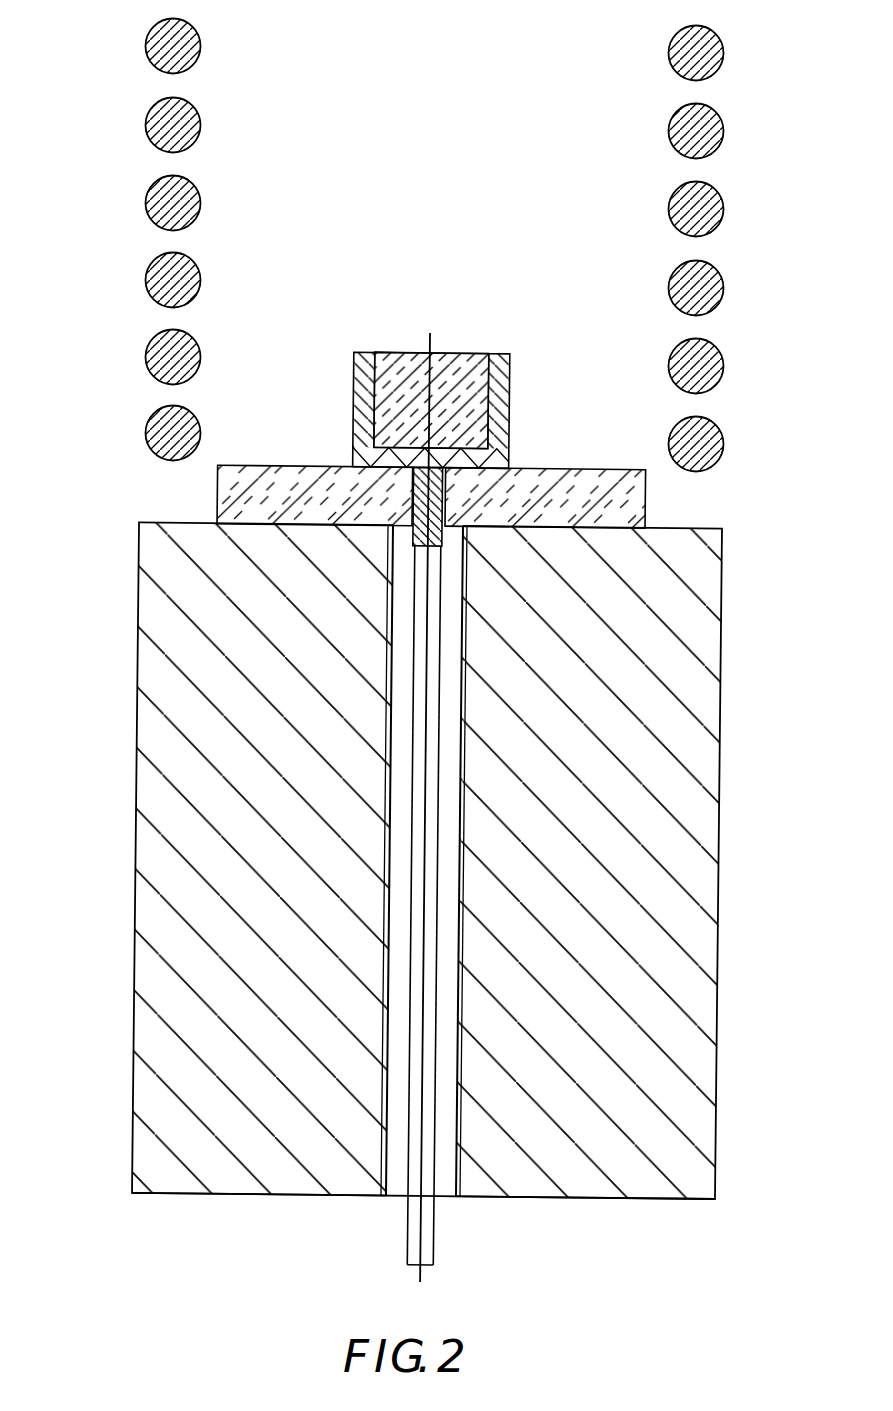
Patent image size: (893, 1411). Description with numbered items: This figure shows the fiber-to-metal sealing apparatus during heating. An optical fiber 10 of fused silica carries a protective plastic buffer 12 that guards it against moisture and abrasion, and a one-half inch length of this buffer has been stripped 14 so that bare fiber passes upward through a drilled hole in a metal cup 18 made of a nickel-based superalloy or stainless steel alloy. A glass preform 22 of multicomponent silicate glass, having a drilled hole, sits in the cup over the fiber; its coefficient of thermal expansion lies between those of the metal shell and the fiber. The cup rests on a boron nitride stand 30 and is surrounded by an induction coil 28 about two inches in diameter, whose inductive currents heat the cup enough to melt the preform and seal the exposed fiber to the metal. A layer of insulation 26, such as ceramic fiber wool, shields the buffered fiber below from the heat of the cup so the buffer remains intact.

The optical fiber 10 is at (470, 1269).
The protective plastic buffer 12 is at (436, 1157).
The stripped length of buffer 14 is at (430, 345).
The metal cup 18 is at (352, 392).
The glass preform 22 is at (472, 365).
The layer of insulation 26 is at (646, 488).
The induction coil 28 is at (147, 121).
The boron nitride stand 30 is at (139, 723).